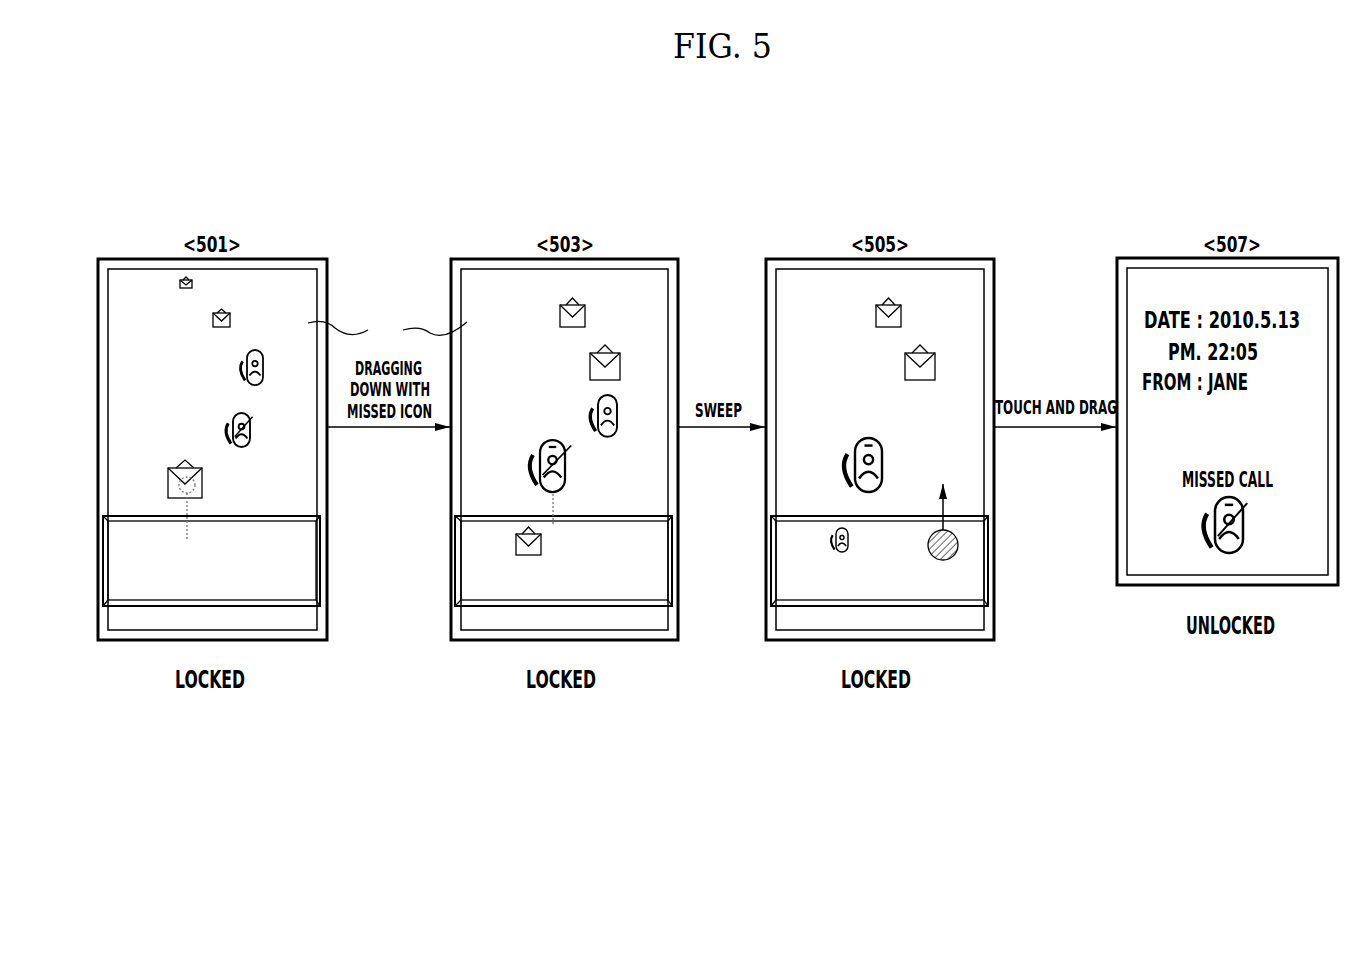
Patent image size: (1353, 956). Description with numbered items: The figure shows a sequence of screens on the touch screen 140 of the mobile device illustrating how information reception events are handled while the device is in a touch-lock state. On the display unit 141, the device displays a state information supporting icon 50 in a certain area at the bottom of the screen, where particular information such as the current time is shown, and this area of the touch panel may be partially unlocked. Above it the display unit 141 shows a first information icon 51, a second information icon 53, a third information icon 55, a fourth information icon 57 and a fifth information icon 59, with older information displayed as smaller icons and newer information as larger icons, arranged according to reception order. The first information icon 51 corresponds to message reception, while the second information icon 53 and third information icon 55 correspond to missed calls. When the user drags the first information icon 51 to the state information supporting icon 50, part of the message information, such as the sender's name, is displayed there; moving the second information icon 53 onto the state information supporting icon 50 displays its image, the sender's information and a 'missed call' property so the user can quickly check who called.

The state information supporting icon 50 is at (467, 552).
The first information icon 51 is at (203, 483).
The second information icon 53 is at (540, 450).
The third information icon 55 is at (596, 424).
The fourth information icon 57 is at (231, 320).
The fifth information icon 59 is at (193, 283).
The touch screen 140 is at (460, 290).
The display unit 141 is at (387, 326).